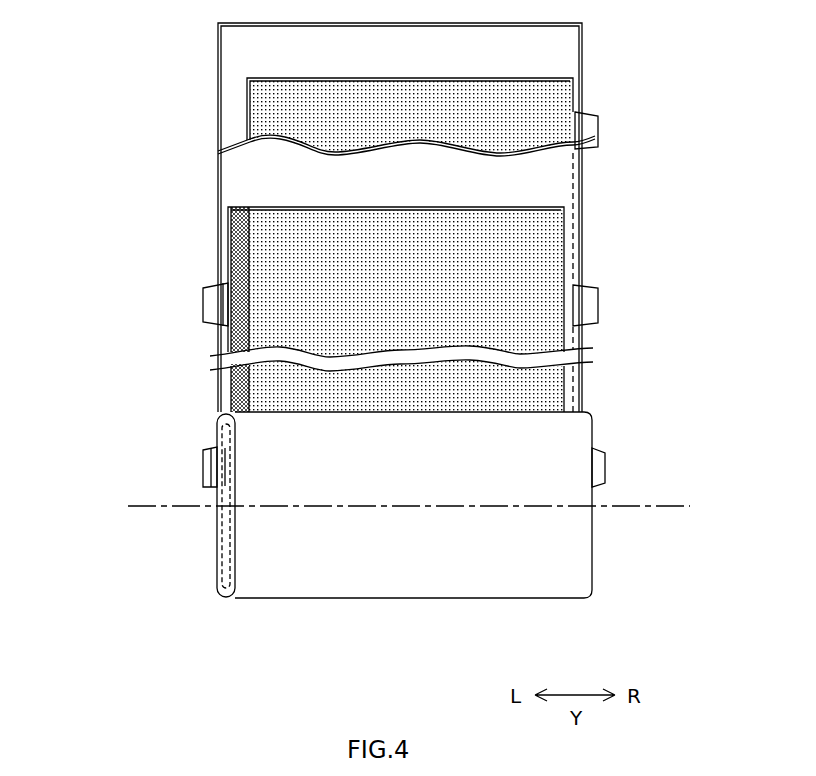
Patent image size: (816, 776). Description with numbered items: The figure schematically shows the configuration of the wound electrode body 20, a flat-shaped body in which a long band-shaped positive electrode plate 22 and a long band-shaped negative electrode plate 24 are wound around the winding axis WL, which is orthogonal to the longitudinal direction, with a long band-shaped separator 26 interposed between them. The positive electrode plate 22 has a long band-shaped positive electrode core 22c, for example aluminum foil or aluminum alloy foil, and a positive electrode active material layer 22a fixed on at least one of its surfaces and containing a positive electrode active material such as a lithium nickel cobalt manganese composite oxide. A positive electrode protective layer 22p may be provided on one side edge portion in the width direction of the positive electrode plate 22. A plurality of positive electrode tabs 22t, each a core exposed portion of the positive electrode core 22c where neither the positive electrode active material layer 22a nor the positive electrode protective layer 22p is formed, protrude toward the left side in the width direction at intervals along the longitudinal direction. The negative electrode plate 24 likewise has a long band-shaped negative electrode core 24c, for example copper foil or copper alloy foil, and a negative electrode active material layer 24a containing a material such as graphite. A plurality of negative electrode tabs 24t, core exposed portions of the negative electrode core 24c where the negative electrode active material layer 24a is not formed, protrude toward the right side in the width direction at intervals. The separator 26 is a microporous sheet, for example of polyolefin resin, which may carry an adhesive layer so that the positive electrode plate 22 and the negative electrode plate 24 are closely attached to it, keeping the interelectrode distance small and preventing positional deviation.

The wound electrode body 20 is at (466, 591).
The positive electrode plate 22 is at (293, 347).
The positive electrode active material layer 22a is at (278, 270).
The positive electrode core 22c is at (229, 343).
The positive electrode protective layer 22p is at (232, 227).
The positive electrode tab 22t is at (183, 385).
The negative electrode plate 24 is at (510, 280).
The negative electrode active material layer 24a is at (553, 101).
The negative electrode core 24c is at (575, 222).
The negative electrode tab 24t is at (596, 131).
The separator 26 is at (240, 43).
The winding axis WL is at (668, 505).